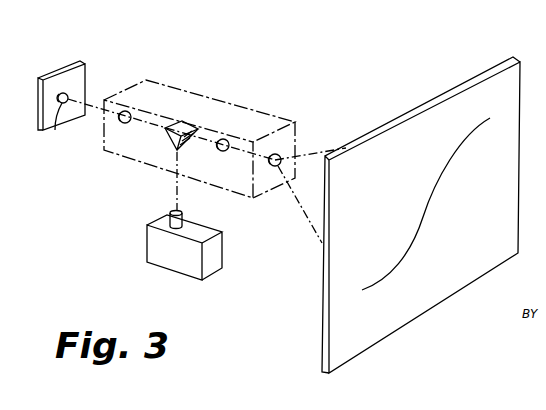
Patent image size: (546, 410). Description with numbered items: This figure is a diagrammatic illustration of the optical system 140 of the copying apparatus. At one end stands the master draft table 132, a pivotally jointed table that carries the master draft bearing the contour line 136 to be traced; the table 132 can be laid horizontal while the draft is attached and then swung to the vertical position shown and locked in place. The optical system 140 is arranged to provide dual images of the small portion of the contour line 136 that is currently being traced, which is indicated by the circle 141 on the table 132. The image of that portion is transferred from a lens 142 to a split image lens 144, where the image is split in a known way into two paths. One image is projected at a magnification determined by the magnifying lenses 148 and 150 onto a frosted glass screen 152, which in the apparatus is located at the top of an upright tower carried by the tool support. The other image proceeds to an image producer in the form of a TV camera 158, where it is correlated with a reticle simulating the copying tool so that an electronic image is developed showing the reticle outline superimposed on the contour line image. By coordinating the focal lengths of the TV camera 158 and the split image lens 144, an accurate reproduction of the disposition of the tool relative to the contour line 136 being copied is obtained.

The master draft table 132 is at (50, 82).
The contour line 136 is at (55, 130).
The optical system 140 is at (227, 100).
The circle 141 is at (68, 96).
The lens 142 is at (135, 105).
The split image lens 144 is at (172, 138).
The magnifying lens 148 is at (228, 141).
The magnifying lens 150 is at (275, 168).
The frosted glass screen 152 is at (393, 125).
The TV camera 158 is at (157, 255).